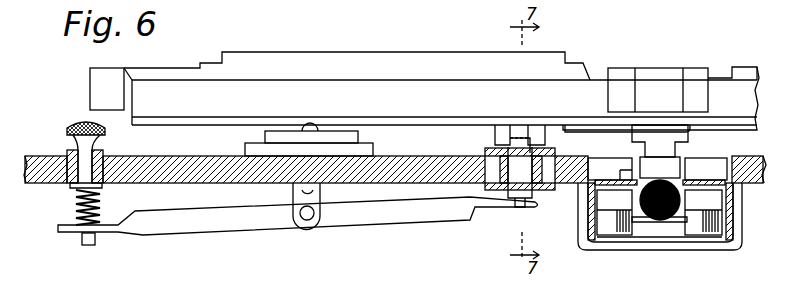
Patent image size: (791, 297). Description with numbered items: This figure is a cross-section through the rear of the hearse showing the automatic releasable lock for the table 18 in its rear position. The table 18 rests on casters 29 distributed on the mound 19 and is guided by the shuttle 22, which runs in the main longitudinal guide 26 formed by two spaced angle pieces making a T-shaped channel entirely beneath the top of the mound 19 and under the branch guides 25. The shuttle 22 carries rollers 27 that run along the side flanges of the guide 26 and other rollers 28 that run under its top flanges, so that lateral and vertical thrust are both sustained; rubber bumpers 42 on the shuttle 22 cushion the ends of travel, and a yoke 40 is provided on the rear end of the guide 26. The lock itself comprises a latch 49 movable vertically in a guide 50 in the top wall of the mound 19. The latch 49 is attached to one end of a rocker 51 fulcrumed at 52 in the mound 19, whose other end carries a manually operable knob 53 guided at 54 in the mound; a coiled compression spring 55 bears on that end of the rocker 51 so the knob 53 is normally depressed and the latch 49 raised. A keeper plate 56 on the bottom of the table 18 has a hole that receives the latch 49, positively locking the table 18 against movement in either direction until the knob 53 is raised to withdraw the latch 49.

The table 18 is at (287, 85).
The shuttle 22 is at (658, 152).
The guide 50 is at (543, 165).
The casters 29 is at (315, 128).
The mound 19 is at (415, 157).
The knob 53 is at (67, 130).
The guide 54 is at (102, 165).
The coiled compression spring 55 is at (103, 207).
The rocker 51 is at (370, 215).
The fulcrum 52 is at (307, 218).
The keeper plate 56 is at (496, 128).
The latch 49 is at (521, 143).
The main longitudinal guide 26 is at (733, 202).
The guides 25 is at (688, 168).
The rollers 28 is at (706, 169).
The rubber bumpers 42 is at (655, 222).
The rollers 27 is at (693, 225).
The yoke 40 is at (727, 250).